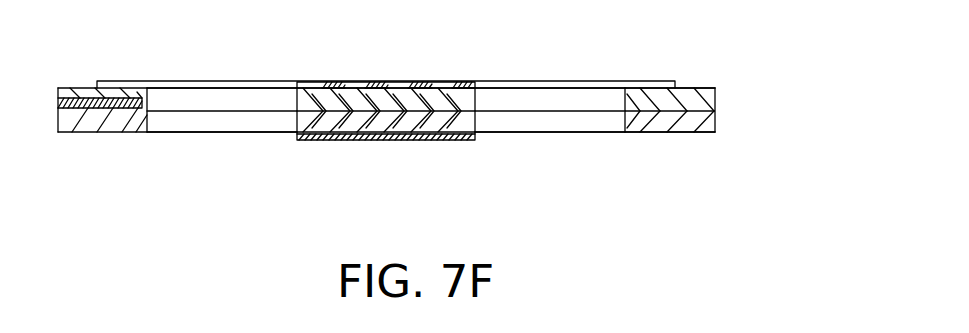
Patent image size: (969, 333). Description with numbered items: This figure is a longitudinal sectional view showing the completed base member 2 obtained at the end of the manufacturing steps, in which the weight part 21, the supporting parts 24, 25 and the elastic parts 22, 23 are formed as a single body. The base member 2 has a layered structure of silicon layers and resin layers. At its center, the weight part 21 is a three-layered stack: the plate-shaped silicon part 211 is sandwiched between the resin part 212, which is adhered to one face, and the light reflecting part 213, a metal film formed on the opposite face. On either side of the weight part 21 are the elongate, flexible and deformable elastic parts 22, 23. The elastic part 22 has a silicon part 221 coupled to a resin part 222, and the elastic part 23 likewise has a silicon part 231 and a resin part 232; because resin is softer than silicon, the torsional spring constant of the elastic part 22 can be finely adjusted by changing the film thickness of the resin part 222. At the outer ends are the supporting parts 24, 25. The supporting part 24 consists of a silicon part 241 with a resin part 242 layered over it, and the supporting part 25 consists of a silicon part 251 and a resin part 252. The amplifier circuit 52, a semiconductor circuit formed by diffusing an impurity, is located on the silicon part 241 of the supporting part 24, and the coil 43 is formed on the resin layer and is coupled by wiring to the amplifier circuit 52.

The base member 2 is at (55, 148).
The weight part 21 is at (392, 161).
The silicon part 211 is at (488, 193).
The resin part 212 is at (455, 140).
The light reflecting part 213 is at (397, 134).
The elastic part 22 is at (218, 164).
The silicon part 221 is at (277, 196).
The resin part 222 is at (232, 100).
The elastic part 23 is at (560, 166).
The silicon part 231 is at (645, 197).
The resin part 232 is at (592, 102).
The supporting part 24 is at (93, 188).
The silicon part 241 is at (87, 125).
The resin part 242 is at (118, 107).
The supporting part 25 is at (730, 115).
The silicon part 251 is at (702, 126).
The resin part 252 is at (702, 100).
The coil 43 is at (190, 85).
The amplifier circuit 52 is at (70, 88).